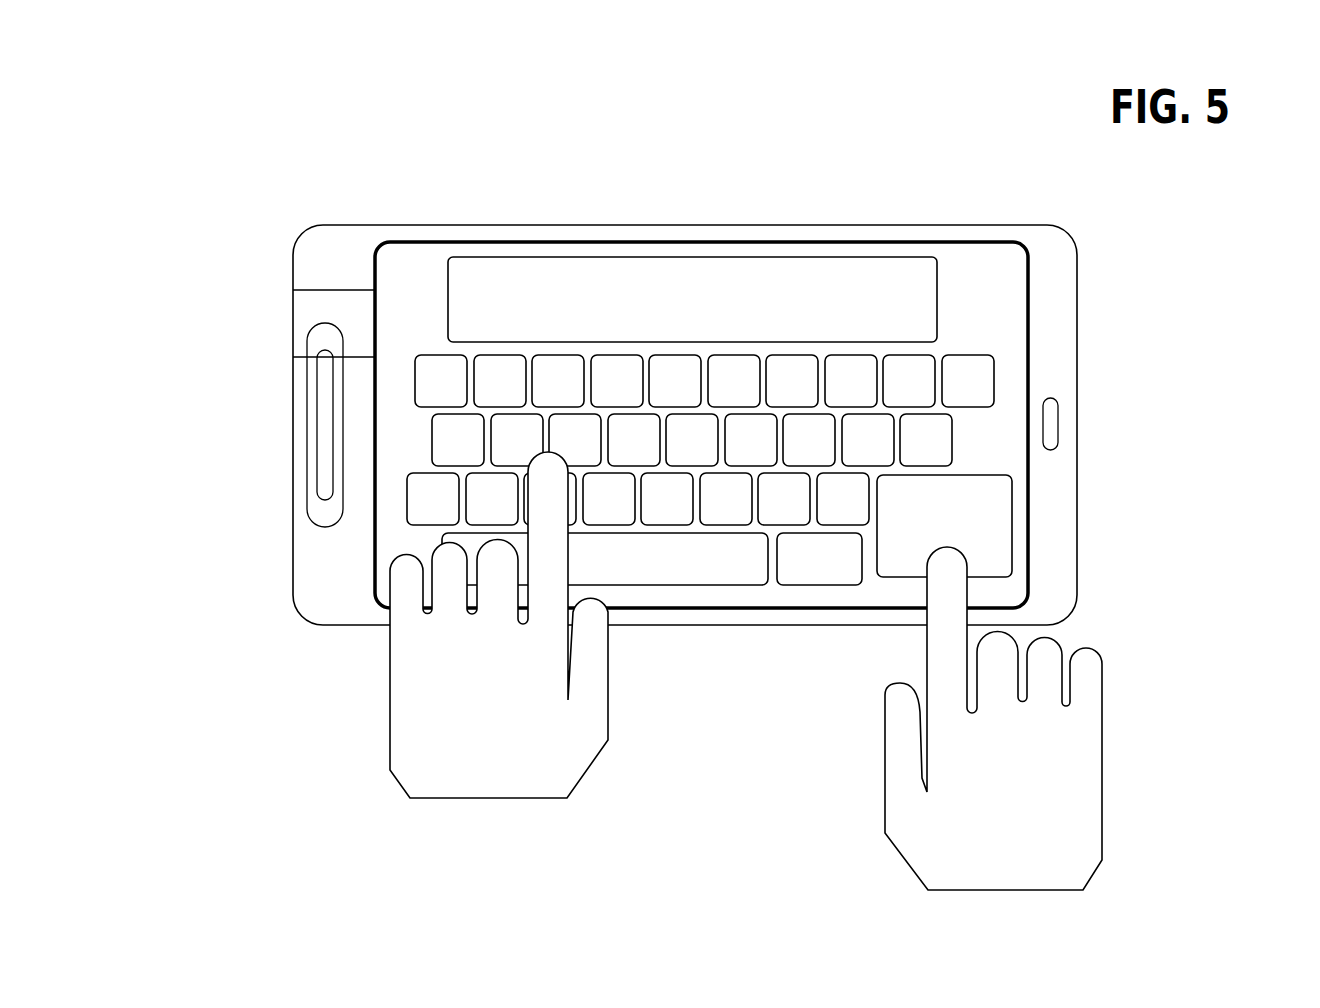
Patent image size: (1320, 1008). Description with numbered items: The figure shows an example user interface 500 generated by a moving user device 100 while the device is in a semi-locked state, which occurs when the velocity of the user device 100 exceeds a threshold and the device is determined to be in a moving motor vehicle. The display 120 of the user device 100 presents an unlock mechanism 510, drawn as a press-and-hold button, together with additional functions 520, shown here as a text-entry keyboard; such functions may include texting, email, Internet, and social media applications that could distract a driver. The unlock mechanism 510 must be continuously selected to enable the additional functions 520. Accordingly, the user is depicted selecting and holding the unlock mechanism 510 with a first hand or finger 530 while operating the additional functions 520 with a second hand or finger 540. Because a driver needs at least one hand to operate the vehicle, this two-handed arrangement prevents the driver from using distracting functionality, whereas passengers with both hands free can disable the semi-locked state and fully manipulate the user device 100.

The user interface 500 is at (210, 63).
The user device 100 is at (293, 357).
The display 120 is at (375, 290).
The additional functions 520 is at (1003, 338).
The unlock mechanism 510 is at (993, 526).
The first hand or finger 530 is at (1077, 759).
The second hand or finger 540 is at (408, 692).